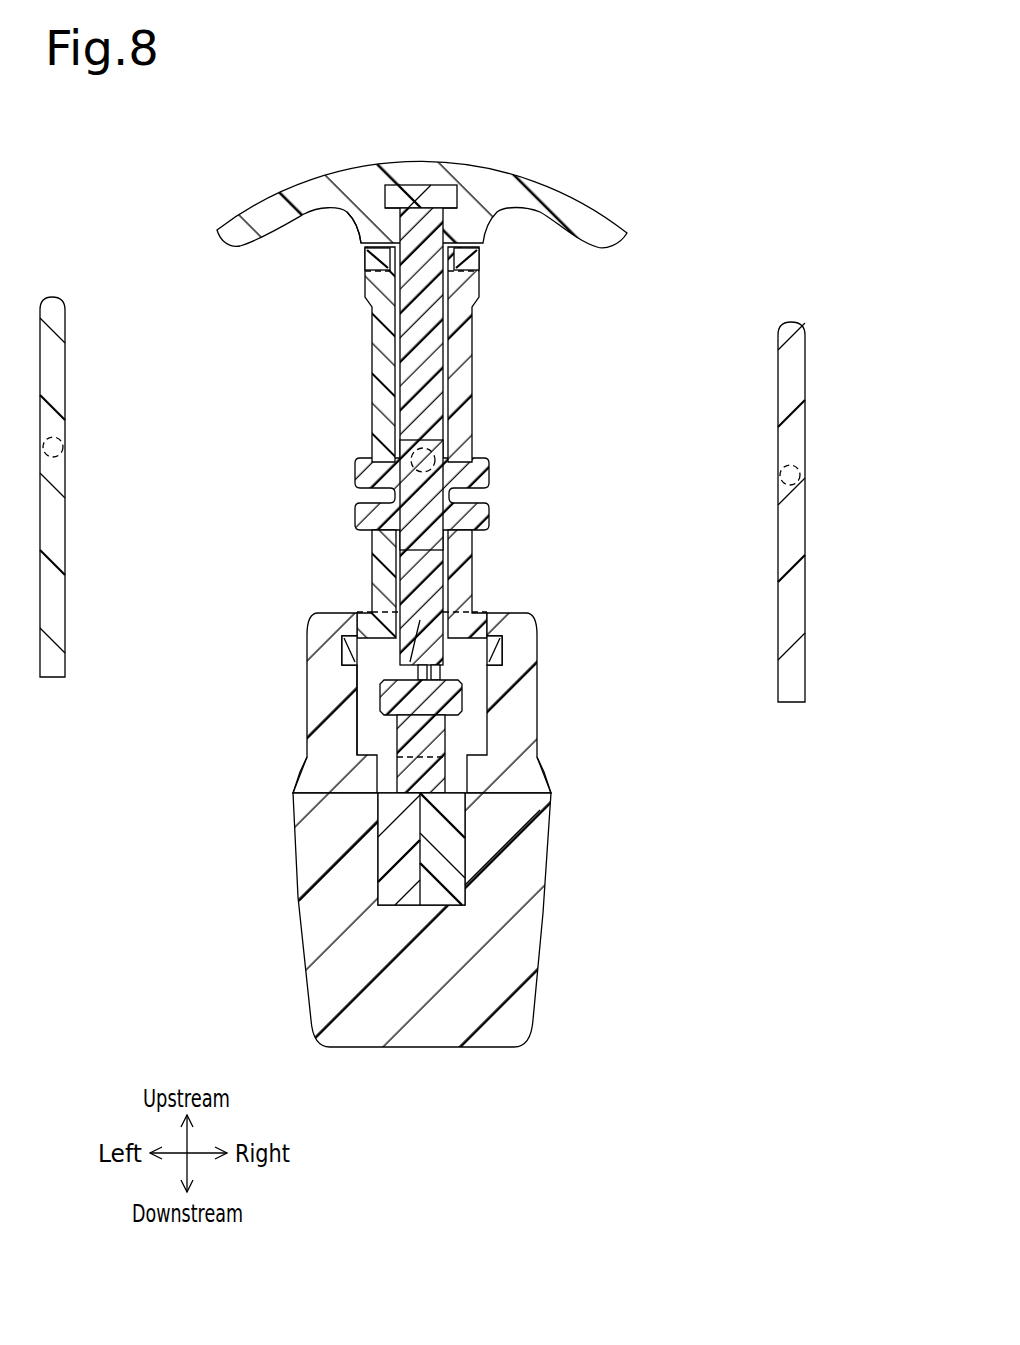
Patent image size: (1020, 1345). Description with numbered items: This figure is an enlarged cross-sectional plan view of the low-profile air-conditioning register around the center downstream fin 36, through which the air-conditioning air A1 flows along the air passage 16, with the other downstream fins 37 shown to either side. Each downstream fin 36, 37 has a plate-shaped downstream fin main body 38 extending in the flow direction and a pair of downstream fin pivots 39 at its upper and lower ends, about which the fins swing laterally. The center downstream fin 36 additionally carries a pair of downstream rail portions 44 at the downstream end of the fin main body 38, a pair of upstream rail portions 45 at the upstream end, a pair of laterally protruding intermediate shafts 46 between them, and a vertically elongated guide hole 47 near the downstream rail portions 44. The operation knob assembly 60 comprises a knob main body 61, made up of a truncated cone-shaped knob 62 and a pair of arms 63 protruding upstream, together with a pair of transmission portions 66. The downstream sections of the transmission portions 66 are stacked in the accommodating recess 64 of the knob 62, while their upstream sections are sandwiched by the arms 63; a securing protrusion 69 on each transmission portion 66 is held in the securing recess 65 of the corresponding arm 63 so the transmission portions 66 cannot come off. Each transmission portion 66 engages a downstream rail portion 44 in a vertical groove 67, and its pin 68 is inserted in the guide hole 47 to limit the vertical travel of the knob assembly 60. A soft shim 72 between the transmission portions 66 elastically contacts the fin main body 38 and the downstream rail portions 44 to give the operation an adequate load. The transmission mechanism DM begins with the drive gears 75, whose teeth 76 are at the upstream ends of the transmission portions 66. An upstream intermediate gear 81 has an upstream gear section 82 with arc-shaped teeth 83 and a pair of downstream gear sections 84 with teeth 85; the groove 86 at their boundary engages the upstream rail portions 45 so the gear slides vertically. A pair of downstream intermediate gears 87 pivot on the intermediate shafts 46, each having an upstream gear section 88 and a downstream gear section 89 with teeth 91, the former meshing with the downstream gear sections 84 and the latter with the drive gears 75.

The air passage 16 is at (254, 370).
The downstream fin 36 is at (491, 436).
The downstream fins 37 is at (782, 530).
The downstream fin main body 38 is at (433, 398).
The downstream fin pivots 39 is at (437, 443).
The downstream rail portions 44 is at (312, 738).
The upstream rail portions 45 is at (372, 193).
The intermediate shafts 46 is at (362, 520).
The guide hole 47 is at (365, 690).
The operation knob assembly 60 is at (545, 1044).
The knob main body 61 is at (595, 964).
The knob 62 is at (530, 932).
The arms 63 is at (322, 676).
The accommodating recess 64 is at (455, 855).
The securing recess 65 is at (345, 651).
The transmission portions 66 is at (387, 812).
The groove 67 is at (380, 700).
The pin 68 is at (418, 660).
The securing protrusion 69 is at (347, 641).
The shim 72 is at (450, 782).
The drive gears 75 is at (446, 586).
The teeth 76 is at (385, 612).
The upstream intermediate gear 81 is at (357, 214).
The upstream gear section 82 is at (641, 168).
The teeth 83 is at (578, 205).
The downstream gear sections 84 is at (441, 264).
The teeth 85 is at (365, 258).
The groove 86 is at (430, 190).
The downstream intermediate gears 87 is at (378, 357).
The upstream gear section 88 is at (441, 297).
The downstream gear section 89 is at (446, 616).
The teeth 91 is at (362, 268).
The air-conditioning air A1 is at (432, 147).
The transmission mechanism DM is at (640, 343).